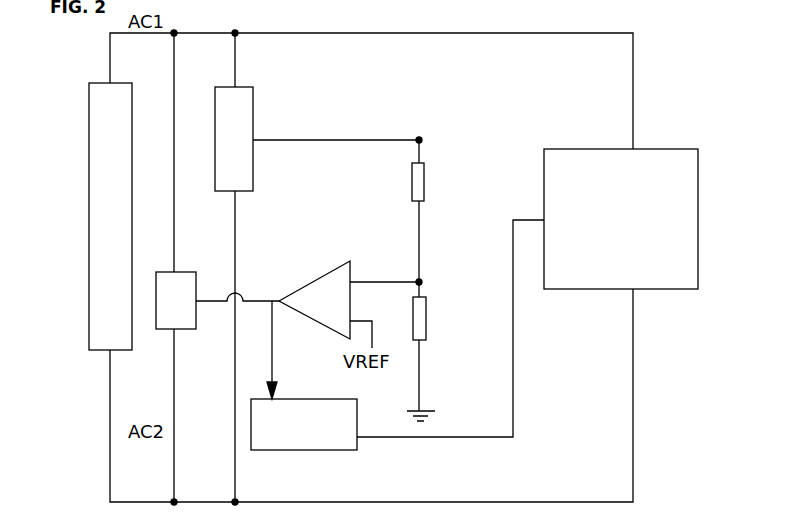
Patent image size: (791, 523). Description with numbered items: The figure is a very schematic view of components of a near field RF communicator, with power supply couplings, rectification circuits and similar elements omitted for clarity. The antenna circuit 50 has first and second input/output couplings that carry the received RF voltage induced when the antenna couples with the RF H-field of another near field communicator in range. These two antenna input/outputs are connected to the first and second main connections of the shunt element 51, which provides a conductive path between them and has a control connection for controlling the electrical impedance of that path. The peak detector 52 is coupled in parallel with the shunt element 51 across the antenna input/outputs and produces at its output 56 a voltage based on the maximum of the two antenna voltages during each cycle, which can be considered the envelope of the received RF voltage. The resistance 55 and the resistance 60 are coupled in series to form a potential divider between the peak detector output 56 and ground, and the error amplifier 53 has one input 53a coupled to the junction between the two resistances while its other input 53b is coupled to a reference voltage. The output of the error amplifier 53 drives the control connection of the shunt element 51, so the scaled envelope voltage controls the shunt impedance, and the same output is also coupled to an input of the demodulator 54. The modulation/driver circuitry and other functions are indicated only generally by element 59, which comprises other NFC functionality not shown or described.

The antenna circuit 50 is at (110, 216).
The shunt element 51 is at (176, 300).
The peak detector 52 is at (234, 139).
The error amplifier 53 is at (314, 300).
The input of error amplifier 53a is at (384, 274).
The input of error amplifier 53b is at (370, 325).
The demodulator 54 is at (304, 424).
The resistance 55 is at (432, 211).
The output of peak detector 56 is at (337, 130).
The NFC functionality 59 is at (621, 219).
The resistance 60 is at (430, 350).